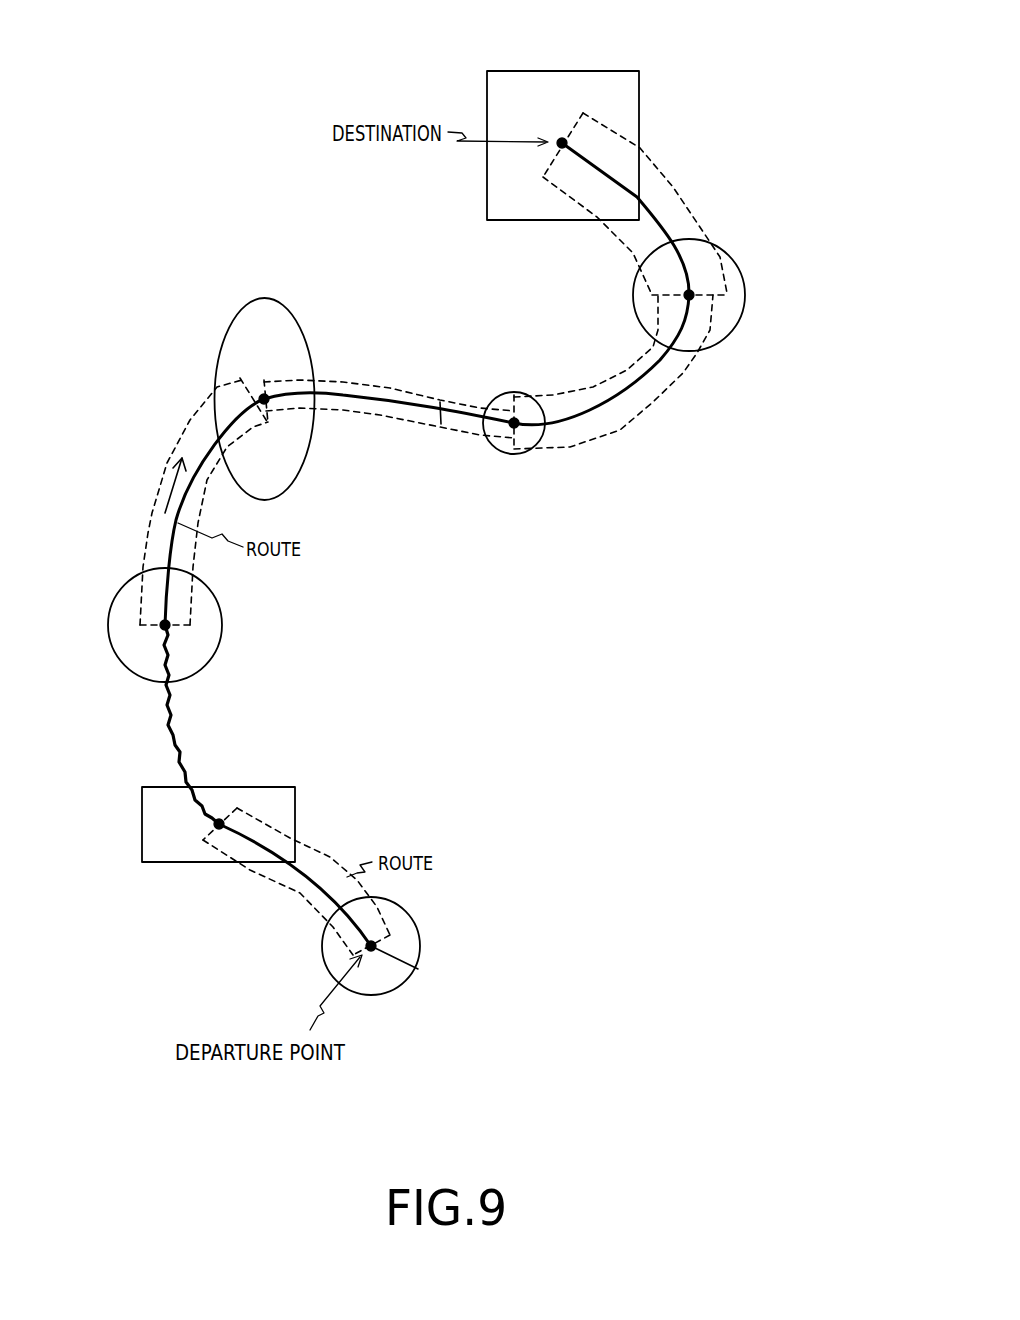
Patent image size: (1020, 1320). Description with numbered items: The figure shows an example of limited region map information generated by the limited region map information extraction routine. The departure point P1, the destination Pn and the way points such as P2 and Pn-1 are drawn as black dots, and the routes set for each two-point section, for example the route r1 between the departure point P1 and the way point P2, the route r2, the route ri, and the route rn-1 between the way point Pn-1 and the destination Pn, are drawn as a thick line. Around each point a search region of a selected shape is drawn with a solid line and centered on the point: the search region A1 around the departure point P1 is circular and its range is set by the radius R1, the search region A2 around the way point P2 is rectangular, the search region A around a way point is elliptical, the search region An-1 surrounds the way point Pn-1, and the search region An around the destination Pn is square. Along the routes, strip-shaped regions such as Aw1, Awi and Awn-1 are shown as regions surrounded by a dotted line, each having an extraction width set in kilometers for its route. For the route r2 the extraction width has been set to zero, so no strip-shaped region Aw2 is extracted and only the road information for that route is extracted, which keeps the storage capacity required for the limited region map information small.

The destination Pn is at (555, 75).
The search region An is at (596, 145).
The route rn-1 is at (669, 219).
The search region An-1 is at (740, 295).
The way point Pn-1 is at (748, 339).
The strip-shaped region Awn-1 is at (616, 204).
The search region A is at (265, 360).
The departure point P1 is at (280, 674).
The route ri is at (389, 361).
The strip-shaped region Awi is at (389, 440).
The route r2 is at (222, 611).
The strip-shaped region Aw2 is at (170, 579).
The search region A2 is at (255, 800).
The way point P2 is at (148, 840).
The strip-shaped region Aw1 is at (304, 881).
The route r1 is at (295, 887).
The search region A1 is at (410, 934).
The radius R1 is at (435, 952).